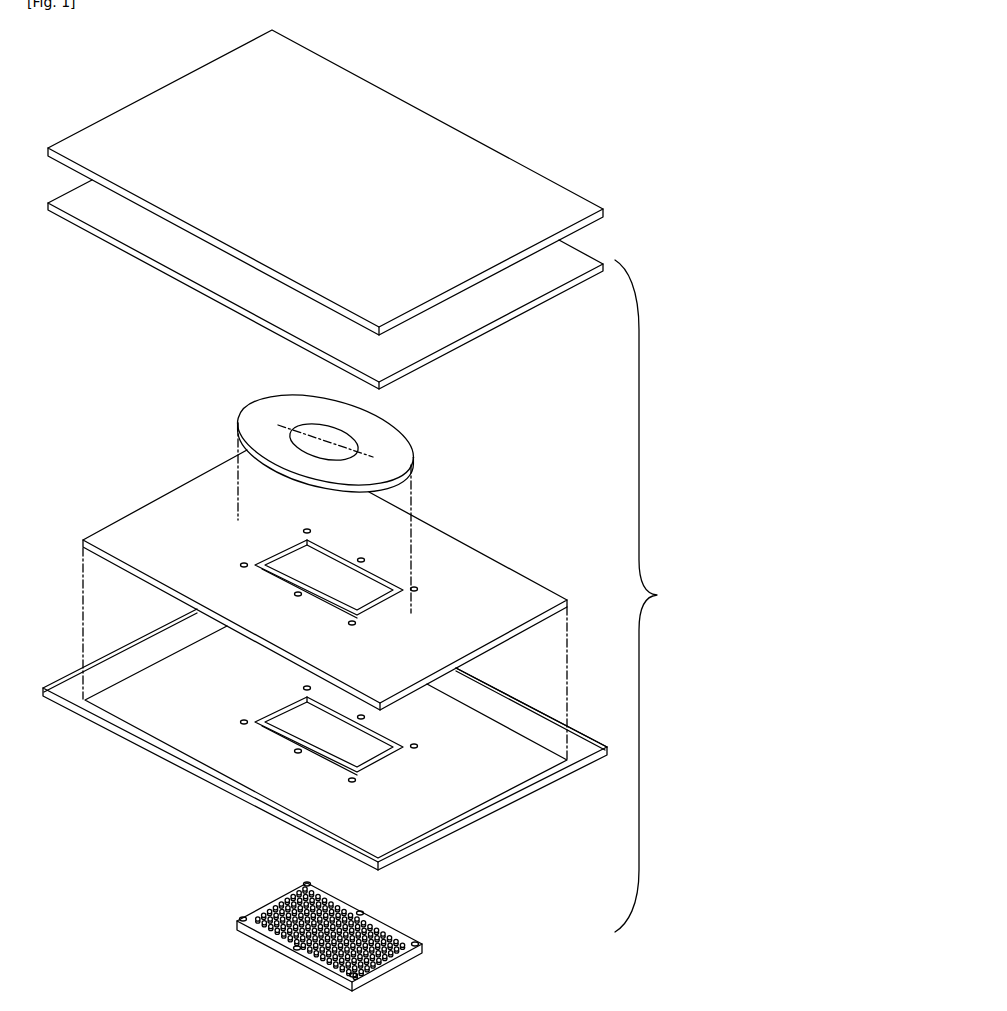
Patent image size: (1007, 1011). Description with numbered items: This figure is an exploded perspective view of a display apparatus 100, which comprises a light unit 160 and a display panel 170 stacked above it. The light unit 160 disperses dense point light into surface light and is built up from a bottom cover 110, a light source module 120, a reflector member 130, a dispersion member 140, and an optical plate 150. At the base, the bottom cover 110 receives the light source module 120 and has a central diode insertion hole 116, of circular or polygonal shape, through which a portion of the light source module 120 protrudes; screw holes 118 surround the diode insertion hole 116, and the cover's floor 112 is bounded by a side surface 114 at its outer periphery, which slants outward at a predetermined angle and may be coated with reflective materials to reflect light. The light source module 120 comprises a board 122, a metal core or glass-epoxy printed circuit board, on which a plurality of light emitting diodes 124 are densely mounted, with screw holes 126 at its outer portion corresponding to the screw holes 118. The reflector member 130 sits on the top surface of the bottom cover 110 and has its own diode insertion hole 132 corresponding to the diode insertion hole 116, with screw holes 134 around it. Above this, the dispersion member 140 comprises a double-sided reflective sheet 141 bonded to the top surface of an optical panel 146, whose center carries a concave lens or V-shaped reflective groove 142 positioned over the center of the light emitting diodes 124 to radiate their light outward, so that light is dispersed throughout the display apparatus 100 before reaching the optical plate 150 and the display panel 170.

The display apparatus 100 is at (64, 109).
The bottom cover 110 is at (331, 735).
The bottom plate of frame 112 is at (175, 672).
The side surface 114 is at (490, 702).
The diode insertion hole 116 is at (285, 715).
The screw holes 118 is at (242, 718).
The light source module 120 is at (352, 933).
The board 122 is at (288, 950).
The light emitting diodes 124 is at (278, 896).
The screw holes 126 is at (242, 918).
The reflector member 130 is at (325, 604).
The diode insertion hole 132 is at (296, 562).
The screw holes 134 is at (240, 565).
The dispersion member 140 is at (344, 489).
The reflective sheet 141 is at (252, 417).
The reflective groove 142 is at (340, 438).
The optical panel 146 is at (333, 487).
The optical plate 150 is at (543, 297).
The light unit 160 is at (653, 596).
The display panel 170 is at (543, 243).